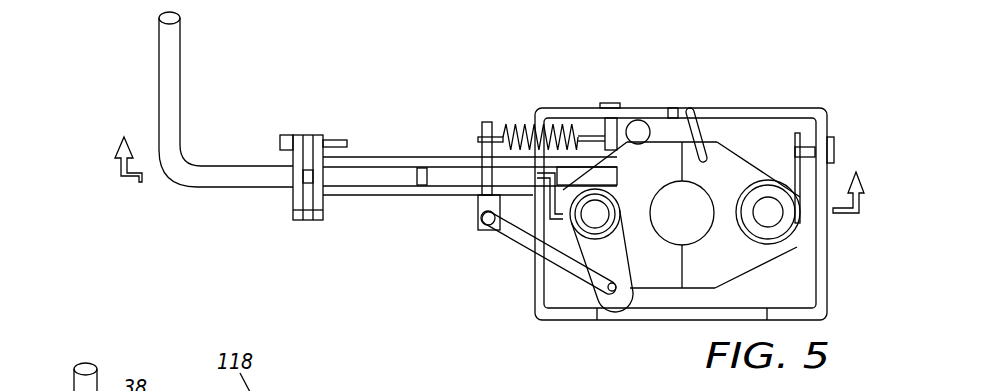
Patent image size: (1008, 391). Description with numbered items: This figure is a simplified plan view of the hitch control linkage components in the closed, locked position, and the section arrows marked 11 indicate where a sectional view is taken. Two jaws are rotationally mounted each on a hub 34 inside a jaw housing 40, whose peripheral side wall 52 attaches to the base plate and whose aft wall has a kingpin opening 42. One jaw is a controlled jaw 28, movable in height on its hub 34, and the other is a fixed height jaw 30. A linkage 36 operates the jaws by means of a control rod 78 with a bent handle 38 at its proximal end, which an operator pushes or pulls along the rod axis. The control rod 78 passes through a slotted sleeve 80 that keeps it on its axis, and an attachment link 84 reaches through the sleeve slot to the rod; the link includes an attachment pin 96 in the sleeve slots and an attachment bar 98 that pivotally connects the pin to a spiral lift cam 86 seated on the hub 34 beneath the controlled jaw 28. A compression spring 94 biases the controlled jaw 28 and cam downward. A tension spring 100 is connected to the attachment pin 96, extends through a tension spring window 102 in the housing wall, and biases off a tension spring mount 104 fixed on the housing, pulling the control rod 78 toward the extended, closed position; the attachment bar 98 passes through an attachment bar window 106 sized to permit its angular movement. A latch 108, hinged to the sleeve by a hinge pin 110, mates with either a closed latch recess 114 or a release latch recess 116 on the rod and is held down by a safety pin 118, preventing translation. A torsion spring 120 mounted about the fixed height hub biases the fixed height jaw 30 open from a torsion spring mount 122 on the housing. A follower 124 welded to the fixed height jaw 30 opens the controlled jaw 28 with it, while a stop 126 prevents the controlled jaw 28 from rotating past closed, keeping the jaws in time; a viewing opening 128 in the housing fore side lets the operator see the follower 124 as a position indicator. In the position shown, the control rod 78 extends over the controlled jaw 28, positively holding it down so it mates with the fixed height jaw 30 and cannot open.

The section line 11- 11 is at (487, 191).
The controlled jaw 28 is at (657, 272).
The fixed height jaw 30 is at (717, 153).
The hub 34 is at (592, 210).
The linkage 36 is at (265, 244).
The handle 38 is at (158, 116).
The jaw housing 40 is at (478, 293).
The kingpin opening 42 is at (645, 315).
The peripheral side wall 52 is at (538, 316).
The control rod 78 is at (397, 170).
The slotted sleeve 80 is at (377, 157).
The attachment link 84 is at (424, 260).
The spiral lift cam 86 is at (598, 295).
The compression spring 94 is at (500, 223).
The attachment pin 96 is at (478, 200).
The attachment bar 98 is at (515, 253).
The tension spring 100 is at (513, 128).
The tension spring window 102 is at (532, 122).
The tension spring mount 104 is at (622, 105).
The attachment bar window 106 is at (540, 283).
The latch 108 is at (305, 220).
The hinge pin 110 is at (293, 208).
The closed latch recess 114 is at (293, 181).
The release latch recess 116 is at (427, 172).
The safety pin 118 is at (287, 137).
The torsion spring 120 is at (758, 183).
The torsion spring mount 122 is at (837, 142).
The follower 124 is at (690, 112).
The stop 126 is at (638, 130).
The viewing opening 128 is at (675, 110).